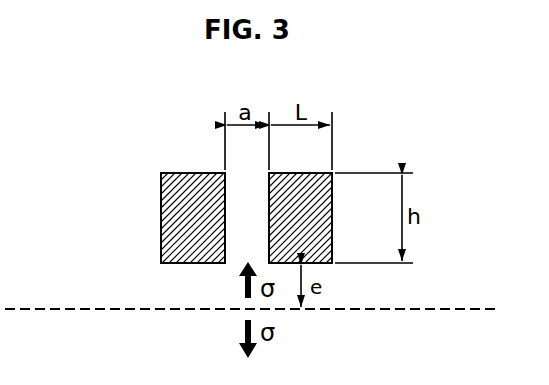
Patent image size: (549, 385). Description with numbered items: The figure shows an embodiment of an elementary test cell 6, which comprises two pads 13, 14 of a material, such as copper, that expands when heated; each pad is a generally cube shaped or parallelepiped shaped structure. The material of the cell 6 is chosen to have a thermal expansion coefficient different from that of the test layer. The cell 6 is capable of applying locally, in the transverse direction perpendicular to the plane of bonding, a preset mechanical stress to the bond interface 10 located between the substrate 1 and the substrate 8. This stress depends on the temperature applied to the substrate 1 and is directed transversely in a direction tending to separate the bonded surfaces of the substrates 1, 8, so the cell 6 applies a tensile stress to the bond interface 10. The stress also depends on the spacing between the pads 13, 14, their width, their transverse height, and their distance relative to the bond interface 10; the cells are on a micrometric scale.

The cell 6 is at (247, 166).
The pad 13 is at (161, 217).
The pad 14 is at (332, 217).
The bond interface 10 is at (458, 309).
The substrate 1 is at (66, 297).
The substrate 8 is at (66, 355).